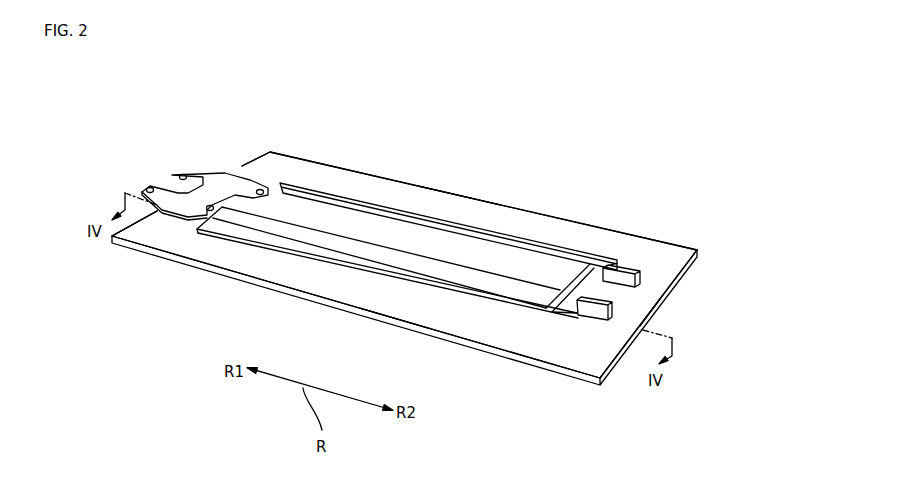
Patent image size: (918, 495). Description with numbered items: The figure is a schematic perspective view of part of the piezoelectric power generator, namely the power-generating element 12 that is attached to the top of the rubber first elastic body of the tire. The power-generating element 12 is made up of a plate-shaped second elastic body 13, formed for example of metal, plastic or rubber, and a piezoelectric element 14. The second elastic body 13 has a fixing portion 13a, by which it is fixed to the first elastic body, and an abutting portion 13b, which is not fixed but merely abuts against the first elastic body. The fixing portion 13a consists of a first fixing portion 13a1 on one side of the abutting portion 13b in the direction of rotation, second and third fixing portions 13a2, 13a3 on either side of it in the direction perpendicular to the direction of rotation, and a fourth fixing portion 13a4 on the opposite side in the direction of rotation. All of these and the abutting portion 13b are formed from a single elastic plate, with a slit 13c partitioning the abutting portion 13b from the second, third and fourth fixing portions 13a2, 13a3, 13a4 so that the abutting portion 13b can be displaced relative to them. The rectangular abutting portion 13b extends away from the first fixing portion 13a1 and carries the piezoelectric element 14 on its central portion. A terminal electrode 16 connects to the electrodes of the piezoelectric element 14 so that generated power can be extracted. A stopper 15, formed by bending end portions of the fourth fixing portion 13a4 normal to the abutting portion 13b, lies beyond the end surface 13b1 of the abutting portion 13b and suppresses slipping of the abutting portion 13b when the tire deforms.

The power-generating element 12 is at (392, 156).
The second elastic body 13 is at (560, 207).
The fixing portion 13a is at (538, 208).
The first fixing portion 13a1 is at (195, 228).
The second fixing portion 13a2 is at (452, 210).
The third fixing portion 13a3 is at (390, 300).
The fourth fixing portion 13a4 is at (640, 304).
The abutting portion 13b is at (540, 310).
The end surface 13b1 is at (572, 325).
The slit 13c is at (497, 310).
The piezoelectric element 14 is at (465, 229).
The stopper 15 is at (625, 267).
The terminal electrode 16 is at (205, 170).